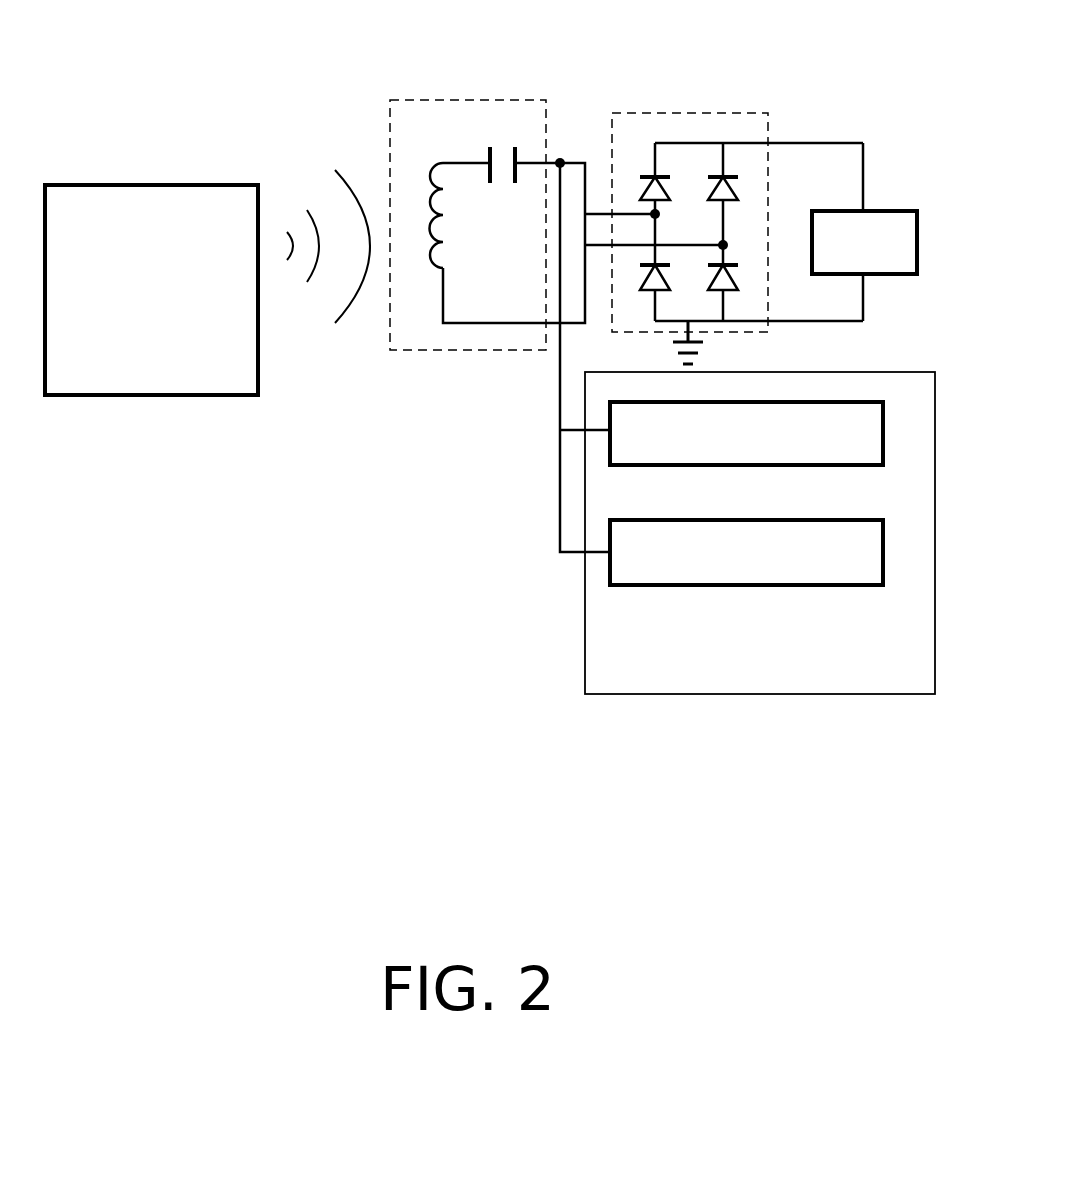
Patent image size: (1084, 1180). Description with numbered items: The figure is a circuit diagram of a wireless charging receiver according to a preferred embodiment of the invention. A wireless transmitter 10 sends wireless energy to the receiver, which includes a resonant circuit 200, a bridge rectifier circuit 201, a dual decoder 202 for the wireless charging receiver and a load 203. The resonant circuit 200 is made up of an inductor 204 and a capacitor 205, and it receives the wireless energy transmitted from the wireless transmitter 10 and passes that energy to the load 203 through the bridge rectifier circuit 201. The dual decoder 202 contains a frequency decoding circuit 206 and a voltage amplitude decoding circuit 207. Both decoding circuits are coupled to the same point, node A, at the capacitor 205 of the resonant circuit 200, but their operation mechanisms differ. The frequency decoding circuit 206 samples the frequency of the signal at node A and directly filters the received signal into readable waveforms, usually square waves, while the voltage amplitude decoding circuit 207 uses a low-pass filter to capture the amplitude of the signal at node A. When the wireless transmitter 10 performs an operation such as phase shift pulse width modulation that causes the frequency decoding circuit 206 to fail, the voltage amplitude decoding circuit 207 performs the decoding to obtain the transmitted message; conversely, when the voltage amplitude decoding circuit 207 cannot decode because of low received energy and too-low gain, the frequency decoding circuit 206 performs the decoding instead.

The wireless transmitter 10 is at (210, 383).
The resonant circuit 200 is at (487, 278).
The bridge rectifier circuit 201 is at (688, 113).
The dual decoder 202 is at (760, 587).
The load 203 is at (907, 211).
The inductor 204 is at (445, 230).
The capacitor 205 is at (502, 163).
The frequency decoding circuit 206 is at (663, 455).
The voltage amplitude decoding circuit 207 is at (650, 575).
The node A is at (560, 160).